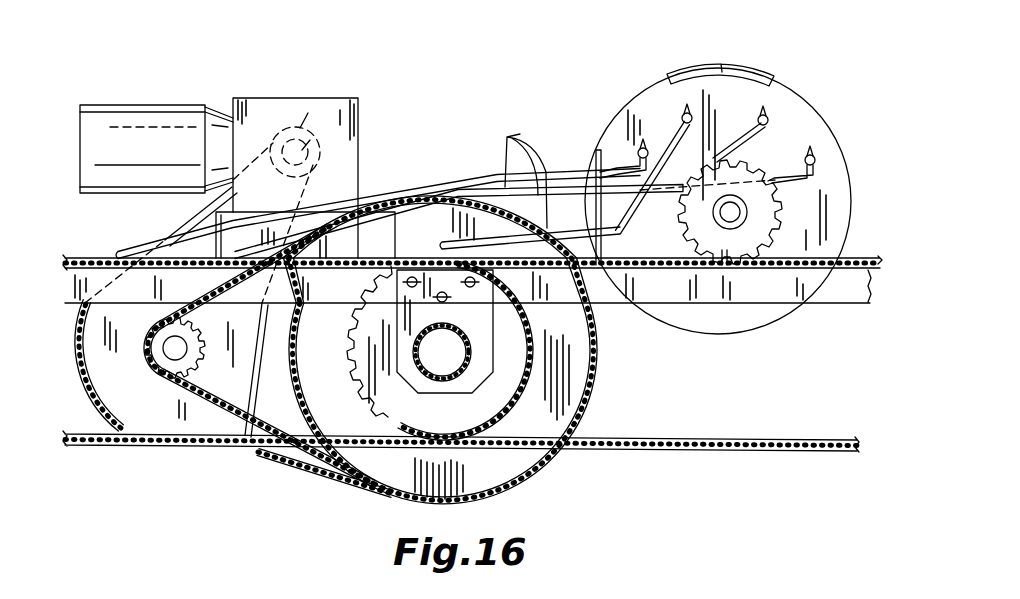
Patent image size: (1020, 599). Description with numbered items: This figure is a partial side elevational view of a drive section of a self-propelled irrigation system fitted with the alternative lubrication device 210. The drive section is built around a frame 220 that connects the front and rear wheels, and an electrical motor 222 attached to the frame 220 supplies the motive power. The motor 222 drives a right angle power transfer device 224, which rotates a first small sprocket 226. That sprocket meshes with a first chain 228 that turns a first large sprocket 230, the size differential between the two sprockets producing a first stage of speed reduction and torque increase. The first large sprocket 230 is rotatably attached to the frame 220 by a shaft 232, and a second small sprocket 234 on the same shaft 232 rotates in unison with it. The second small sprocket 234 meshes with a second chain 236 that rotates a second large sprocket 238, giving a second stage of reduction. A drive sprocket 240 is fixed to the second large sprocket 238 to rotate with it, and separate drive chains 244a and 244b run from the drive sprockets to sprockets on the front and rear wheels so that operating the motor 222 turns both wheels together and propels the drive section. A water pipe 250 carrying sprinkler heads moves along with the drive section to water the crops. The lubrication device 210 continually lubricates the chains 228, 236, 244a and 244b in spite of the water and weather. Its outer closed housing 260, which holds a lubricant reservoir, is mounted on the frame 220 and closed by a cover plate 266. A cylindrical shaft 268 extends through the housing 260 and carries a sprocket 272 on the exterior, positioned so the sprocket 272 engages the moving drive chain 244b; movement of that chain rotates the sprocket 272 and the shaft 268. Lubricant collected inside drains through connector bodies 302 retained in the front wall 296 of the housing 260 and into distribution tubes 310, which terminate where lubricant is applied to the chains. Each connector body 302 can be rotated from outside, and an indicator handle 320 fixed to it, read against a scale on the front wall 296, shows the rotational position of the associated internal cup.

The lubrication device 210 is at (562, 118).
The frame 220 is at (687, 287).
The electrical motor 222 is at (135, 78).
The right angle power transfer device 224 is at (258, 108).
The first small sprocket 226 is at (308, 125).
The first chain 228 is at (300, 210).
The first large sprocket 230 is at (120, 393).
The shaft 232 is at (178, 378).
The second small sprocket 234 is at (175, 353).
The second chain 236 is at (347, 472).
The second large sprocket 238 is at (330, 405).
The drive sprocket 240 is at (413, 430).
The drive chain 244a is at (233, 446).
The drive chain 244b is at (772, 452).
The water pipe 250 is at (463, 370).
The outer closed housing 260 is at (817, 105).
The cover plate 266 is at (733, 32).
The cylindrical shaft 268 is at (742, 218).
The sprocket 272 is at (722, 250).
The front wall 296 is at (640, 102).
The connector body 302 is at (813, 52).
The distribution tube 310 is at (512, 135).
The indicator handle 320 is at (817, 157).